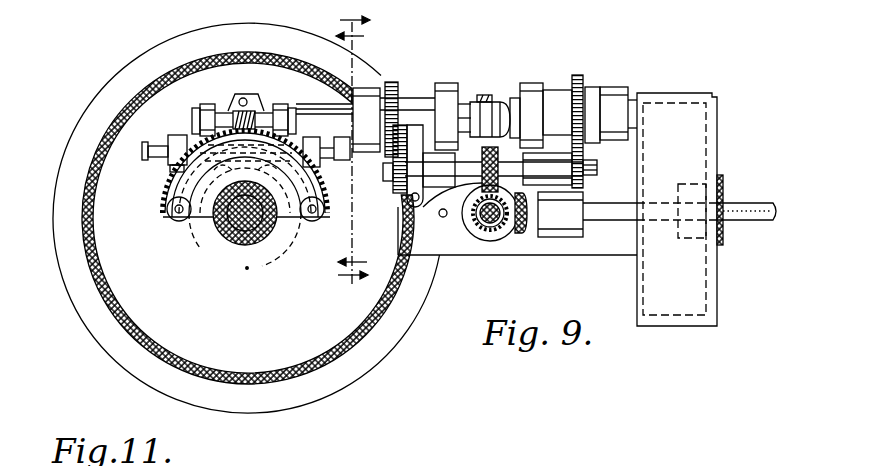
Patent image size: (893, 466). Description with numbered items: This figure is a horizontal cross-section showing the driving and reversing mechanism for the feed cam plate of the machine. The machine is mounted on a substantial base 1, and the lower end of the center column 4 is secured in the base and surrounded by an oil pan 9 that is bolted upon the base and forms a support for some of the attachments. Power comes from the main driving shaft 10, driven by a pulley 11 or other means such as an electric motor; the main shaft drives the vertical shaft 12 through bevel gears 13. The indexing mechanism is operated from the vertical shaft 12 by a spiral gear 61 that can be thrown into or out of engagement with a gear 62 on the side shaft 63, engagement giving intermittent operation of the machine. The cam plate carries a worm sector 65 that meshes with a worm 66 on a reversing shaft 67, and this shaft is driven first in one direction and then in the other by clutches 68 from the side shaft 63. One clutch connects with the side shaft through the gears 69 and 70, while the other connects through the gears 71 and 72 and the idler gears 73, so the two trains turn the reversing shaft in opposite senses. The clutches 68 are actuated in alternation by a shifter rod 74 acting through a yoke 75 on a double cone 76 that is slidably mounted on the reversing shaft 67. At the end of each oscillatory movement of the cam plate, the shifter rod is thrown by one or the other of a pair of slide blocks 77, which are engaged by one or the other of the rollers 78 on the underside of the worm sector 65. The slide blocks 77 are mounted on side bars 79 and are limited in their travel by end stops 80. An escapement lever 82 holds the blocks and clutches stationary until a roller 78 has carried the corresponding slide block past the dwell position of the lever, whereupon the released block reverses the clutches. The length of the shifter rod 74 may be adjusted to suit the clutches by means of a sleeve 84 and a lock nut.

The base 1 is at (584, 255).
The center column 4 is at (232, 232).
The oil pan 9 is at (107, 303).
The main driving shaft 10 is at (745, 210).
The pulley 11 is at (345, 150).
The vertical shaft 12 is at (460, 264).
The bevel gears 13 is at (522, 230).
The spiral gear 61 is at (486, 222).
The gear 62 is at (482, 192).
The side shaft 63 is at (462, 132).
The worm sector 65 is at (168, 183).
The worm 66 is at (242, 96).
The reversing shaft 67 is at (328, 113).
The clutches 68 is at (443, 95).
The gear 69 is at (592, 175).
The gear 70 is at (584, 80).
The gear 71 is at (400, 188).
The gear 72 is at (392, 84).
The idler gears 73 is at (400, 130).
The shifter rod 74 is at (386, 173).
The yoke 75 is at (485, 98).
The double cone 76 is at (502, 104).
The slide blocks 77 is at (197, 134).
The rollers 78 is at (178, 222).
The side bars 79 is at (292, 104).
The end stops 80 is at (183, 143).
The escapement lever 82 is at (270, 244).
The sleeve 84 is at (148, 160).